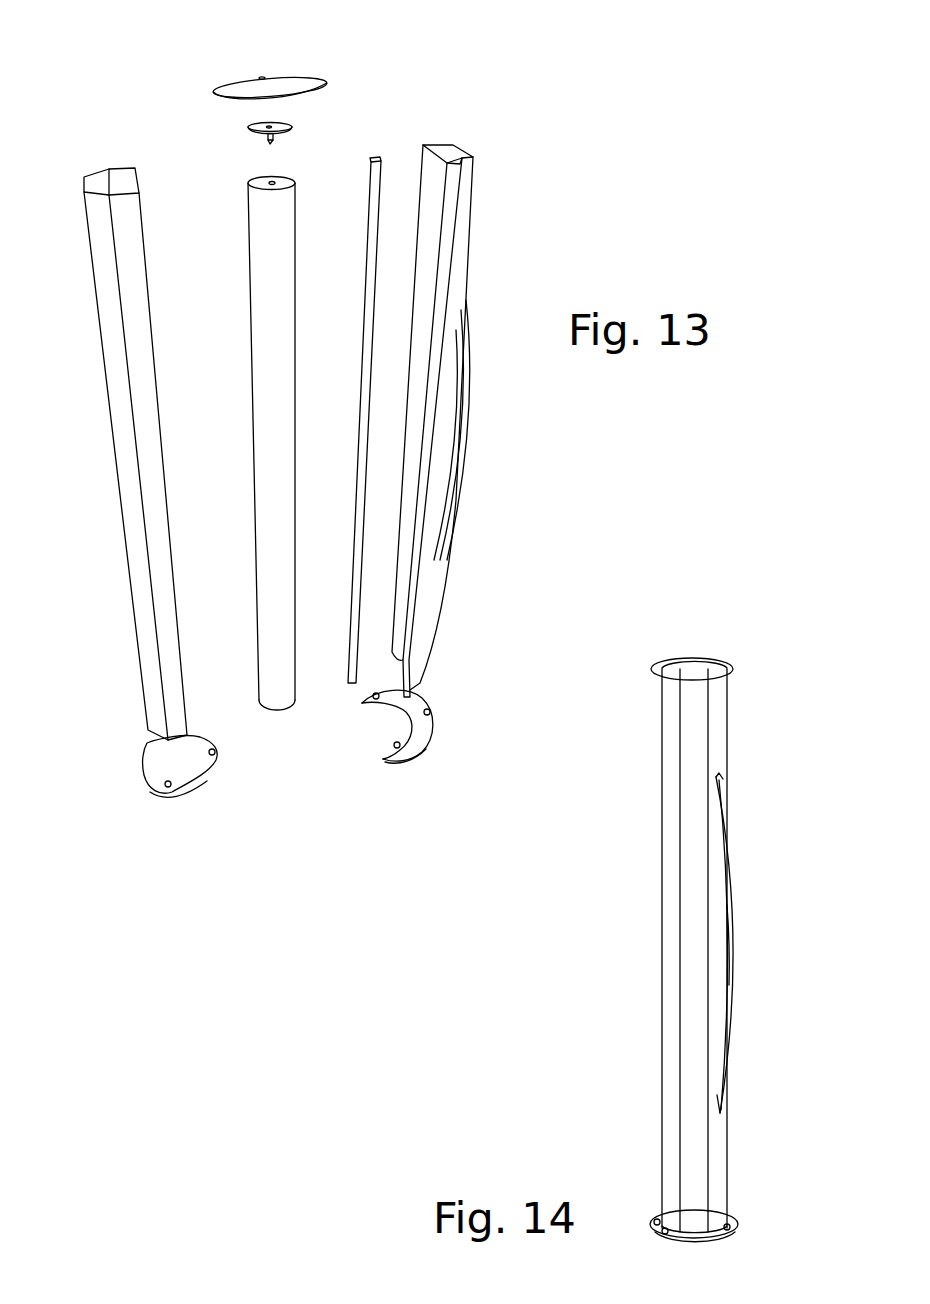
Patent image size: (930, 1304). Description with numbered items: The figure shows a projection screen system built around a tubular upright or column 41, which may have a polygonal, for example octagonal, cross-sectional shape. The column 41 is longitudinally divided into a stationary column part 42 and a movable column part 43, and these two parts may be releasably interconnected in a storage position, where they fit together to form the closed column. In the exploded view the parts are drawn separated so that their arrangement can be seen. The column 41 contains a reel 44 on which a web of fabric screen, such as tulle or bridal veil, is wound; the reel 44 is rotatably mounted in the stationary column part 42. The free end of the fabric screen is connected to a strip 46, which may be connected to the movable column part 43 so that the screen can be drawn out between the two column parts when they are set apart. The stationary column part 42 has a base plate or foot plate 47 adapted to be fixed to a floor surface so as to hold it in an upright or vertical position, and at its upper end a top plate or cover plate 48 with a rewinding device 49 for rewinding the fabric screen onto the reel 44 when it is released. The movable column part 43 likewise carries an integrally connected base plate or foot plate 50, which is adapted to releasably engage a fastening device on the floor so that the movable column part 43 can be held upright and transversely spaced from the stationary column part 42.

In FIG. 14, the tubular column 41 is at (730, 747).
In FIG. 13, the stationary column part 42 is at (120, 412).
In FIG. 13, the movable column part 43 is at (430, 612).
In FIG. 13, the reel 44 is at (263, 237).
In FIG. 13, the strip 46 is at (380, 157).
In FIG. 13, the foot plate 47 is at (158, 765).
In FIG. 13, the cover plate 48 is at (302, 84).
In FIG. 14, the cover plate 48 is at (727, 660).
In FIG. 13, the rewinding device 49 is at (296, 124).
In FIG. 13, the foot plate 50 is at (428, 728).
In FIG. 14, the foot plate 50 is at (738, 1218).